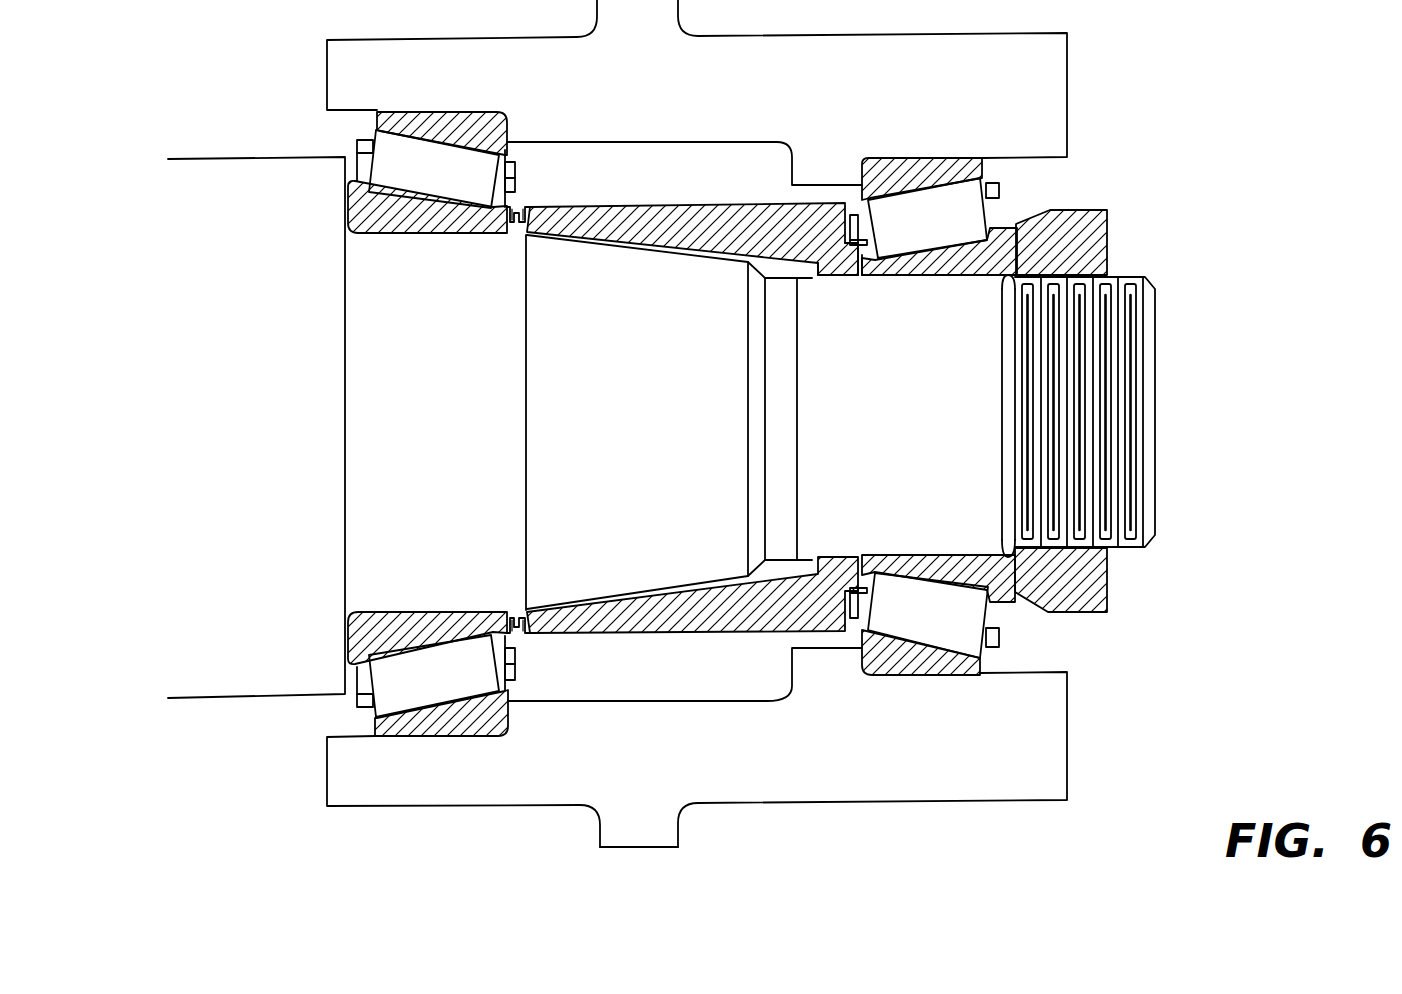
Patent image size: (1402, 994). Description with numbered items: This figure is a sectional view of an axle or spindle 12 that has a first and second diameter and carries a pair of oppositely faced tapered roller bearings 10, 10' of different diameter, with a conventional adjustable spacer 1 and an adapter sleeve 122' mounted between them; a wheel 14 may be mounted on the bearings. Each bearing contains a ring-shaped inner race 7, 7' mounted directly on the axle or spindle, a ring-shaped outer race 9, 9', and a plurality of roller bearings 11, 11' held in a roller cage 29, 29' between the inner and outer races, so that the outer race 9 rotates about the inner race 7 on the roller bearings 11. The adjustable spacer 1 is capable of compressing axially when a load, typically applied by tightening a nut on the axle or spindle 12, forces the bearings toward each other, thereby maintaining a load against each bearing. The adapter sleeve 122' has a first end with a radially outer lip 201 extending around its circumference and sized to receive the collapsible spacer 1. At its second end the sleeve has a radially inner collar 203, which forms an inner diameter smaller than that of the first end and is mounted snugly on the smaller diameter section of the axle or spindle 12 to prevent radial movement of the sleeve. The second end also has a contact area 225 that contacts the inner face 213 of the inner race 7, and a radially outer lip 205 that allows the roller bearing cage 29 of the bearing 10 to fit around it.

The adjustable spacer 1 is at (524, 640).
The inner race 7 is at (939, 415).
The inner race 7' is at (379, 422).
The outer race 9 is at (1030, 405).
The outer race 9' is at (377, 408).
The tapered roller bearing 10 is at (1030, 405).
The tapered roller bearing 10' is at (374, 408).
The roller bearings 11 is at (1042, 412).
The roller bearings 11' is at (366, 423).
The axle or spindle 12 is at (950, 472).
The wheel 14 is at (980, 737).
The roller cage 29 is at (1033, 415).
The roller cage 29' is at (374, 413).
The adapter sleeve 122' is at (692, 358).
The radially outer lip 201 is at (520, 231).
The radially inner collar 203 is at (817, 272).
The radially outer lip 205 is at (847, 243).
The inner face 213 is at (866, 265).
The contact area 225 is at (915, 275).